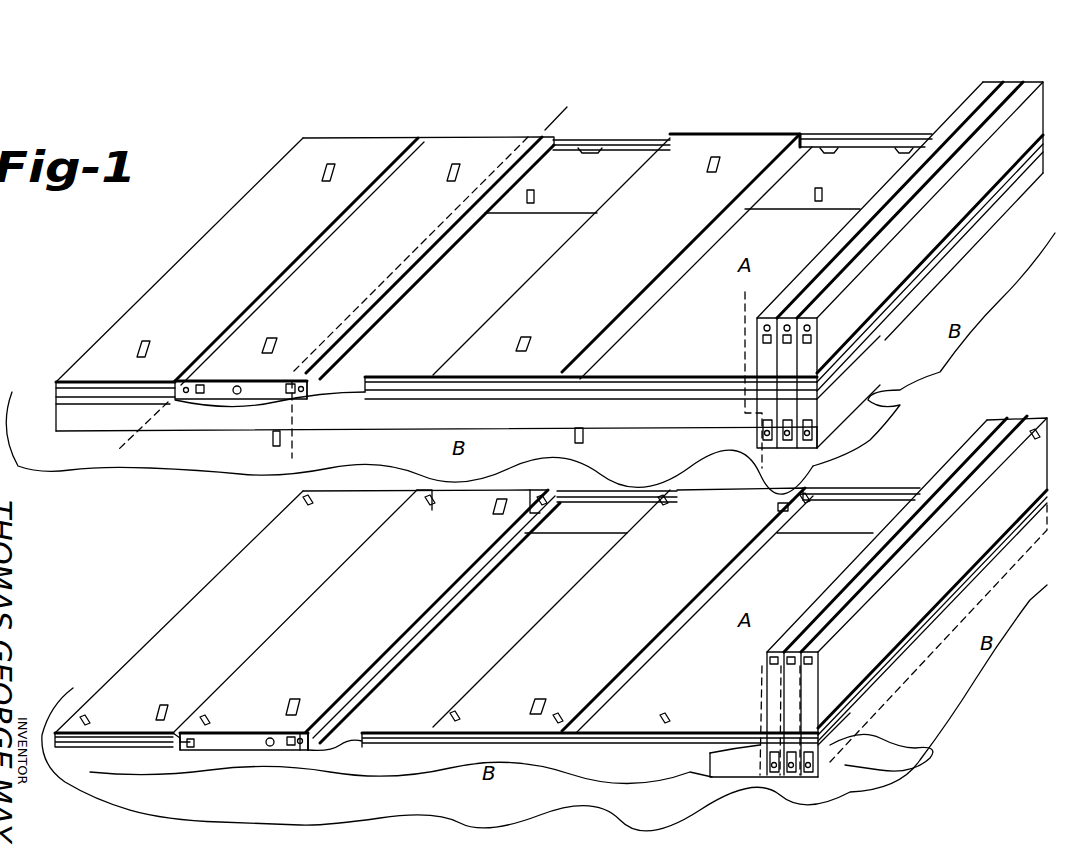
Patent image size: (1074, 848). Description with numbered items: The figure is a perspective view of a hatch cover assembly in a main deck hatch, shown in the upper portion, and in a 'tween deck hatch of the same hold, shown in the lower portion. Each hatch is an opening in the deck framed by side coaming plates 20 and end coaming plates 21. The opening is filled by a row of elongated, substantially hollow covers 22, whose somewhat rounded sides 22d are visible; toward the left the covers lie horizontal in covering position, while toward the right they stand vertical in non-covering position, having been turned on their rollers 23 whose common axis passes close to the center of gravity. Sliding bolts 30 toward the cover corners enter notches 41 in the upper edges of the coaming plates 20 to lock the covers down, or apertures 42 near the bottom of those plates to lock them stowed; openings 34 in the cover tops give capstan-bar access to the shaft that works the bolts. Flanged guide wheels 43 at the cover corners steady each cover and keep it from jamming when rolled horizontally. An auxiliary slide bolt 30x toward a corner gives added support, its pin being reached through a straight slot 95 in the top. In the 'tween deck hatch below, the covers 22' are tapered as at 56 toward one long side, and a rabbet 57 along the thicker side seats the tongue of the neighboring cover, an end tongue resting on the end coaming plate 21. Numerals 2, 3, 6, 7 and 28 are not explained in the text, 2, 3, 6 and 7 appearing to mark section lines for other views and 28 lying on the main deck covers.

The rail end section 2 is at (181, 372).
The section line / panel edge 3 is at (250, 310).
The section line 6 is at (737, 304).
The section line 7 is at (563, 113).
The side coaming plate 20 is at (727, 469).
The end coaming plate 21 is at (950, 762).
The cover 22 is at (575, 252).
The rounded side 22d is at (500, 298).
The 'tween deck cover 22' is at (590, 596).
The roller 23 is at (237, 394).
The panel 28 is at (110, 390).
The sliding bolt 30 is at (292, 382).
The auxiliary slide bolt 30x is at (191, 750).
The opening 34 is at (330, 178).
The notch 41 is at (585, 150).
The aperture 42 is at (534, 194).
The flanged guide wheel 43 is at (320, 372).
The taper 56 is at (205, 718).
The rabbet 57 is at (370, 675).
The straight slot 95 is at (428, 505).